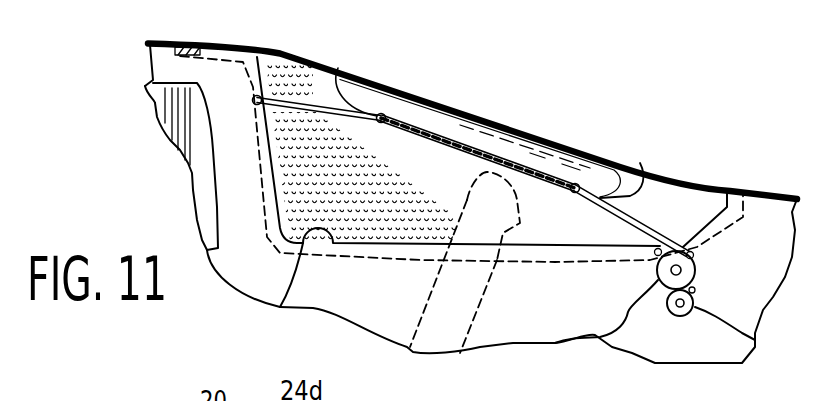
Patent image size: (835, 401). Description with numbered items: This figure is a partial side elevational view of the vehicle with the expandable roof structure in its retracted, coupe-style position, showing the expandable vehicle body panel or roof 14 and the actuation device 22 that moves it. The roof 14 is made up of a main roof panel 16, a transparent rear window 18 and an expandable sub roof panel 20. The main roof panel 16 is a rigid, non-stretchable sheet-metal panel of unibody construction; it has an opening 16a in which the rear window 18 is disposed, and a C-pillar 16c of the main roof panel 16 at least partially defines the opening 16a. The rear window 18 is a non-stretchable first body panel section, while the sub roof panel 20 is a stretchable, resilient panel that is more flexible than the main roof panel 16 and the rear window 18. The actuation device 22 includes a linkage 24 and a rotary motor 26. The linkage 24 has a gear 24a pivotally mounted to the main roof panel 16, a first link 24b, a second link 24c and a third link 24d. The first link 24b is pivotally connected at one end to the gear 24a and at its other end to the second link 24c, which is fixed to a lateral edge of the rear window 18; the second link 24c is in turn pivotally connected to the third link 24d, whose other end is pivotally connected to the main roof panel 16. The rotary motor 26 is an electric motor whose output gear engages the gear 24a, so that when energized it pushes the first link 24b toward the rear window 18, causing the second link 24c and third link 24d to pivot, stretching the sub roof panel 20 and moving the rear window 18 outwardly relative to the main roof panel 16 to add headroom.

The expandable vehicle body panel 14 is at (652, 68).
The main roof panel 16 is at (155, 35).
The opening 16a is at (148, 44).
The C-pillars 16c is at (237, 172).
The rear window 18 is at (555, 134).
The expandable sub roof panel 20 is at (291, 48).
The actuation device 22 is at (675, 330).
The linkage 24 is at (665, 207).
The gear 24a is at (628, 313).
The first link 24b is at (640, 163).
The second link 24c is at (430, 134).
The third link 24d is at (337, 106).
The rotary motor 26 is at (755, 340).